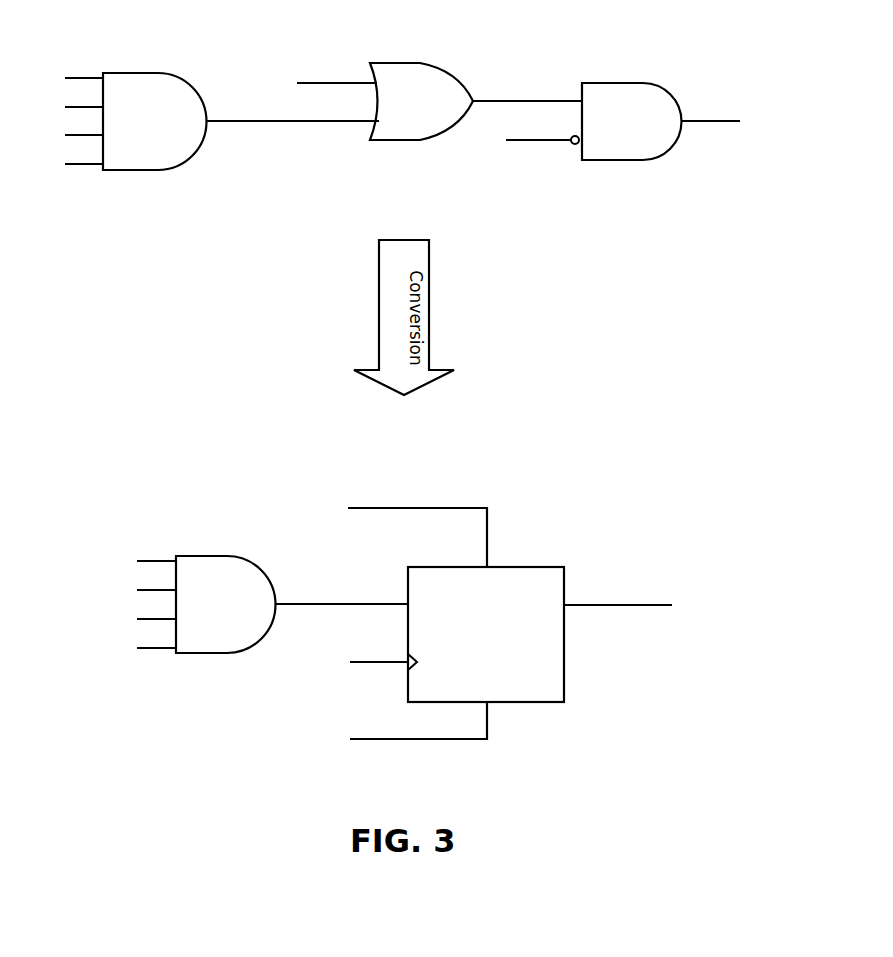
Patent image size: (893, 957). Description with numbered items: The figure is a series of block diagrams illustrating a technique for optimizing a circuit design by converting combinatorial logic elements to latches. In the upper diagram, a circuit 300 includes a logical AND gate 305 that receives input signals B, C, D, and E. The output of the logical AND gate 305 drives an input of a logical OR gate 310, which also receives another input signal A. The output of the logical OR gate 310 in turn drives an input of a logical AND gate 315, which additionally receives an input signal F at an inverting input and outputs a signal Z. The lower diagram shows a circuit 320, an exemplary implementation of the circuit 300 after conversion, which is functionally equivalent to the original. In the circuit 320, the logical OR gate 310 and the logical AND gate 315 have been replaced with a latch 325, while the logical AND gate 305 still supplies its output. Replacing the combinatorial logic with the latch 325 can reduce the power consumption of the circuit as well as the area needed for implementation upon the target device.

The circuit 300 is at (113, 35).
The logical AND gate 305 is at (227, 363).
The logical OR gate 310 is at (429, 101).
The logical AND gate 315 is at (625, 121).
The circuit 320 is at (113, 524).
The latch 325 is at (550, 567).